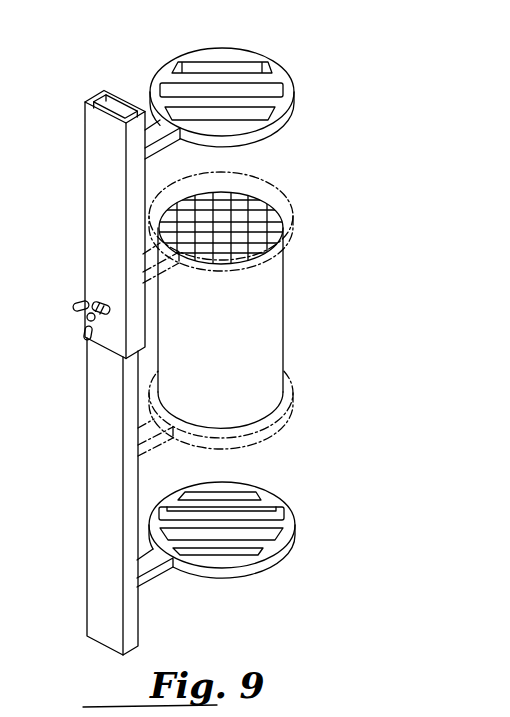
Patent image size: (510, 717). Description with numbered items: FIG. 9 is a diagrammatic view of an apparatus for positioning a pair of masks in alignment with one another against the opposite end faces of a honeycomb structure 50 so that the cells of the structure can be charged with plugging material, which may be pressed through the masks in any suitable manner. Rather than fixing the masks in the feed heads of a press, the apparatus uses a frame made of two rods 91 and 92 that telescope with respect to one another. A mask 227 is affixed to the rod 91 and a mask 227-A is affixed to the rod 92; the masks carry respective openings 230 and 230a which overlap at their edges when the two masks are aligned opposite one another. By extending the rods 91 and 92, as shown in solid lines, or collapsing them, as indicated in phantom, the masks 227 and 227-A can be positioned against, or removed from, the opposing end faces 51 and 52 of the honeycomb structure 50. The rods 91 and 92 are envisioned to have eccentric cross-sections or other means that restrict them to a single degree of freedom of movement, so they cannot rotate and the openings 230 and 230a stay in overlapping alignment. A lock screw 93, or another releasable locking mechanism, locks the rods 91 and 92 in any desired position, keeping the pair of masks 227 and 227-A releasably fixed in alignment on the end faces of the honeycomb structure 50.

The honeycomb structure 50 is at (265, 326).
The end face 51 is at (256, 212).
The end face 52 is at (270, 432).
The rod 91 is at (107, 210).
The rod 92 is at (105, 488).
The lock screw 93 is at (80, 322).
The mask 227 is at (285, 122).
The mask 227-A is at (302, 412).
The openings 230 is at (260, 92).
The openings 230a is at (243, 513).